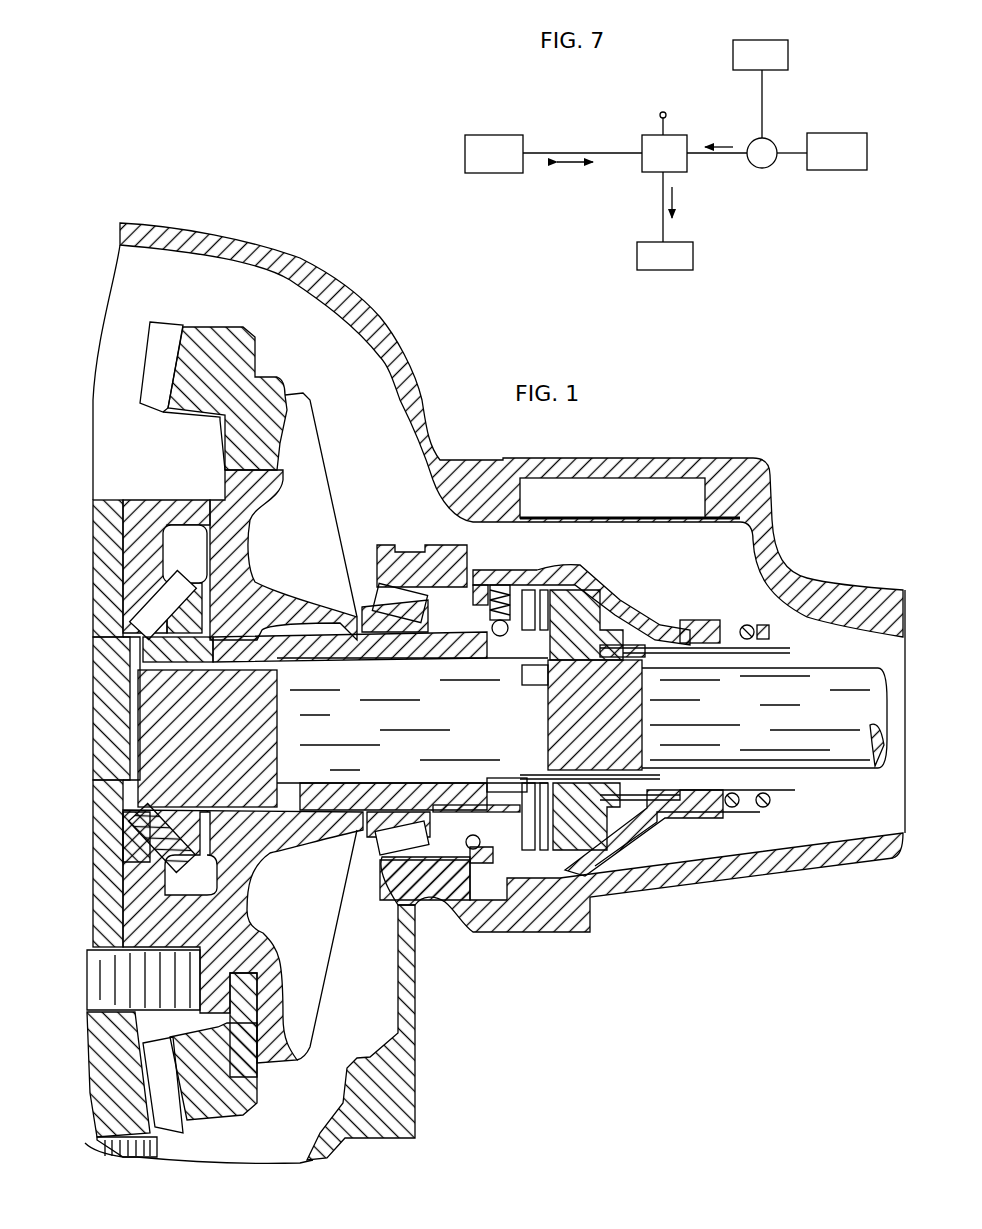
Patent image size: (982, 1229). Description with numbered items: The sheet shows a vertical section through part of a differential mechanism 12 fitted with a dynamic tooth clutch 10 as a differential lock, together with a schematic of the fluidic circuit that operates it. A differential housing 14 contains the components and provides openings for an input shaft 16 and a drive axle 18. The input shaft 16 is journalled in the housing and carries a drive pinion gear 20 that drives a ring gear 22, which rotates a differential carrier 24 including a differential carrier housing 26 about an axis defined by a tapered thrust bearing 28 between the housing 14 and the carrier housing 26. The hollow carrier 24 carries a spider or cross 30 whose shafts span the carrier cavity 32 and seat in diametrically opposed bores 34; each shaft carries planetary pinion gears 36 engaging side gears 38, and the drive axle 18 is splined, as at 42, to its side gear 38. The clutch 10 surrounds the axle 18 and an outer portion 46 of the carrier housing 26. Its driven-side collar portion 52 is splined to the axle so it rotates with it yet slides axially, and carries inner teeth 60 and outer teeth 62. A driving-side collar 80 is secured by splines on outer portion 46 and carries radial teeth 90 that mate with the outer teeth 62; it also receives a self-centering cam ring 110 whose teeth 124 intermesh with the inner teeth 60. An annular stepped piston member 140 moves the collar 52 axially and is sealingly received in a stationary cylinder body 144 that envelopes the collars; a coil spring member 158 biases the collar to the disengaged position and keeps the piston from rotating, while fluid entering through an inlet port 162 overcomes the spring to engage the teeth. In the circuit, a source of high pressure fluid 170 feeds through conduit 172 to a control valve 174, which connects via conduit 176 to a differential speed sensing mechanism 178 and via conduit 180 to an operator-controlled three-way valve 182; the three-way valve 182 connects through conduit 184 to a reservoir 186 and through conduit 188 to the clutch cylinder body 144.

In FIG. 1, the dynamic tooth clutch 10 is at (612, 862).
In FIG. 1, the differential mechanism 12 is at (452, 975).
In FIG. 1, the differential housing 14 is at (457, 480).
In FIG. 1, the input shaft 16 is at (120, 1160).
In FIG. 1, the drive axle 18 is at (830, 722).
In FIG. 1, the drive pinion gear 20 is at (165, 1132).
In FIG. 1, the ring gear 22 is at (222, 1112).
In FIG. 1, the differential carrier 24 is at (272, 445).
In FIG. 1, the differential carrier housing 26 is at (300, 610).
In FIG. 1, the tapered thrust bearing 28 is at (375, 595).
In FIG. 1, the spider or cross 30 is at (95, 900).
In FIG. 1, the carrier cavity 32 is at (95, 790).
In FIG. 1, the bores 34 is at (128, 510).
In FIG. 1, the planetary pinion gears 36 is at (93, 578).
In FIG. 1, the side gears 38 is at (120, 648).
In FIG. 1, the splined portion of drive axle 42 is at (245, 665).
In FIG. 1, the outer portion of differential carrier housing 46 is at (455, 775).
In FIG. 1, the driven-side collar portion 52 is at (592, 614).
In FIG. 1, the inner teeth 60 is at (545, 658).
In FIG. 1, the outer teeth 62 is at (548, 595).
In FIG. 1, the driving-side collar 80 is at (478, 588).
In FIG. 1, the radial teeth of driving-side collar 90 is at (523, 600).
In FIG. 1, the cam ring 110 is at (495, 780).
In FIG. 1, the cam ring teeth 124 is at (520, 660).
In FIG. 1, the annular stepped piston member 140 is at (650, 650).
In FIG. 7, the stationary cylinder body 144 is at (465, 153).
In FIG. 1, the stationary cylinder body 144 is at (580, 572).
In FIG. 1, the coil spring member 158 is at (743, 625).
In FIG. 1, the fluid pressure inlet port 162 is at (680, 620).
In FIG. 7, the source of high pressure fluid 170 is at (855, 153).
In FIG. 7, the conduit 172 is at (783, 153).
In FIG. 7, the control valve 174 is at (760, 166).
In FIG. 7, the conduit 176 is at (762, 108).
In FIG. 7, the differential speed sensing mechanism 178 is at (775, 52).
In FIG. 7, the conduit 180 is at (722, 157).
In FIG. 7, the operator-controlled three-way valve 182 is at (676, 143).
In FIG. 7, the conduit 184 is at (663, 213).
In FIG. 7, the reservoir 186 is at (637, 255).
In FIG. 7, the conduit 188 is at (585, 153).